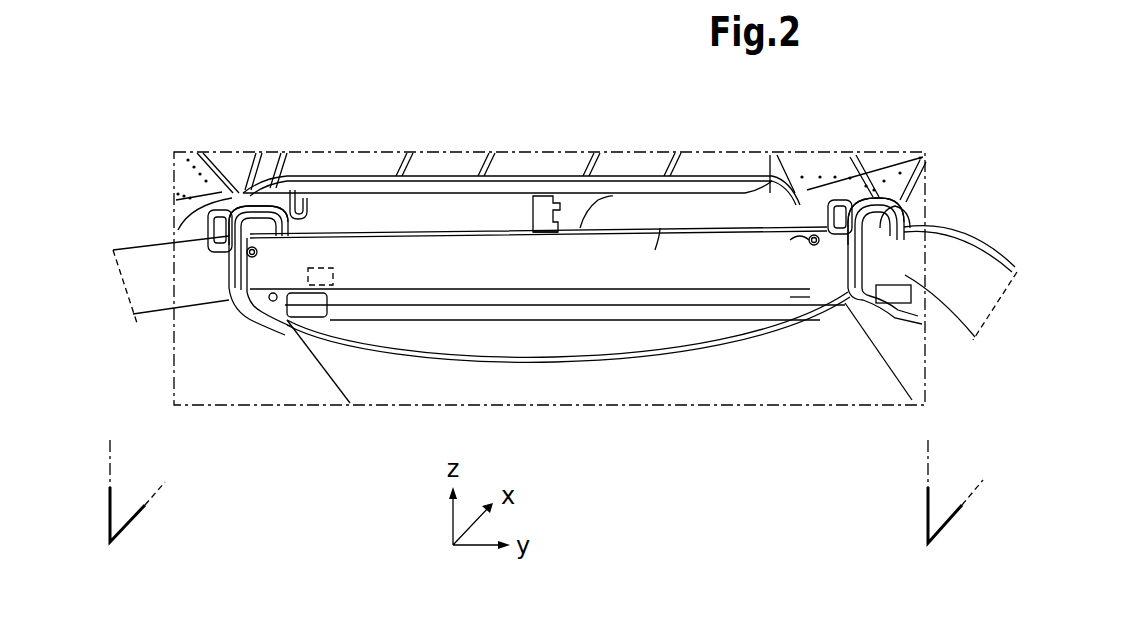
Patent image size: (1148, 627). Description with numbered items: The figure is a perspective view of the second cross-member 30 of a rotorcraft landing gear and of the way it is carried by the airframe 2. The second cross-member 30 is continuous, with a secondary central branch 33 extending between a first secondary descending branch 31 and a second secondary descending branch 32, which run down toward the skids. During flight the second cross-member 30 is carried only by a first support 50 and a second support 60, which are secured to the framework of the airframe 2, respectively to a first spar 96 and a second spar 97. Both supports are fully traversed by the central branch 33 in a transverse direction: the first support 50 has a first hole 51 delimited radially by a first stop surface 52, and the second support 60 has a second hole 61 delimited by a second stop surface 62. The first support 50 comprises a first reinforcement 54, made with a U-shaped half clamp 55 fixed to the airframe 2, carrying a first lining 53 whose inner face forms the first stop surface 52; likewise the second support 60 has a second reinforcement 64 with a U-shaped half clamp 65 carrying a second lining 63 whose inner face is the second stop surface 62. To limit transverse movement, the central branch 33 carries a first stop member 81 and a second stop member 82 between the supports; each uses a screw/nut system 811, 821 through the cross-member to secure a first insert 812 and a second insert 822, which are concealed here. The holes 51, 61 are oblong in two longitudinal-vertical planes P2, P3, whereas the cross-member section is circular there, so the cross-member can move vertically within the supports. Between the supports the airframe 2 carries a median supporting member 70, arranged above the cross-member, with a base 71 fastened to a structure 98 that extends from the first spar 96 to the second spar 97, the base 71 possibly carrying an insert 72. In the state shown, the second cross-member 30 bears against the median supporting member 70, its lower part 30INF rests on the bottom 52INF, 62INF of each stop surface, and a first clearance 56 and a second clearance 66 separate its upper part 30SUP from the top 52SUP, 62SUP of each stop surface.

The airframe 2 is at (192, 148).
The second spar 97 is at (207, 176).
The structure 98 is at (633, 146).
The first spar 96 is at (811, 176).
The second cross-member 30 is at (492, 279).
The upper part of the second cross-member 30SUP is at (507, 240).
The lower part of the second cross-member 30INF is at (627, 270).
The first secondary descending branch 31 is at (977, 310).
The second secondary descending branch 32 is at (165, 330).
The secondary central branch 33 is at (658, 248).
The first support 50 is at (911, 278).
The first hole 51 is at (947, 228).
The first stop surface 52 is at (916, 284).
The top of the first stop surface 52SUP is at (905, 208).
The bottom of the first stop surface 52INF is at (868, 318).
The first lining 53 is at (845, 303).
The first reinforcement 54 is at (870, 252).
The U-shaped half clamp 55 is at (840, 217).
The first clearance 56 is at (882, 216).
The second support 60 is at (280, 269).
The second hole 61 is at (320, 285).
The second stop surface 62 is at (268, 269).
The top of the second stop surface 62SUP is at (265, 212).
The bottom of the second stop surface 62INF is at (258, 300).
The second lining 63 is at (200, 278).
The second reinforcement 64 is at (212, 258).
The U-shaped half clamp 65 is at (220, 230).
The second clearance 66 is at (325, 213).
The median supporting member 70 is at (545, 190).
The base 71 is at (580, 202).
The insert 72 is at (537, 221).
The first stop member 81 is at (809, 240).
The screw/nut system 811 is at (814, 240).
The first insert 812 is at (783, 301).
The second stop member 82 is at (270, 260).
The screw/nut system 821 is at (252, 252).
The second insert 822 is at (385, 290).
The longitudinal-vertical plane P2 is at (118, 488).
The longitudinal-vertical plane P3 is at (935, 488).